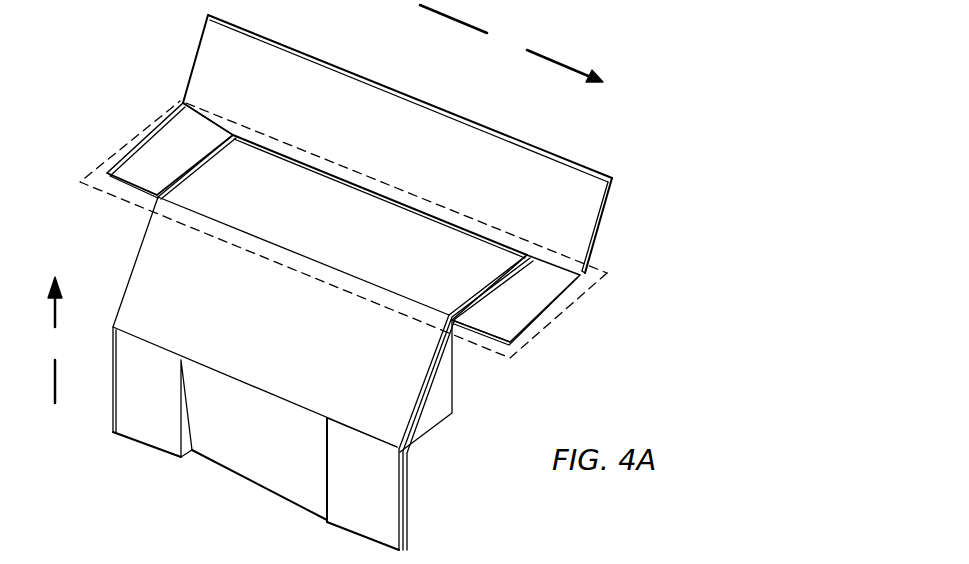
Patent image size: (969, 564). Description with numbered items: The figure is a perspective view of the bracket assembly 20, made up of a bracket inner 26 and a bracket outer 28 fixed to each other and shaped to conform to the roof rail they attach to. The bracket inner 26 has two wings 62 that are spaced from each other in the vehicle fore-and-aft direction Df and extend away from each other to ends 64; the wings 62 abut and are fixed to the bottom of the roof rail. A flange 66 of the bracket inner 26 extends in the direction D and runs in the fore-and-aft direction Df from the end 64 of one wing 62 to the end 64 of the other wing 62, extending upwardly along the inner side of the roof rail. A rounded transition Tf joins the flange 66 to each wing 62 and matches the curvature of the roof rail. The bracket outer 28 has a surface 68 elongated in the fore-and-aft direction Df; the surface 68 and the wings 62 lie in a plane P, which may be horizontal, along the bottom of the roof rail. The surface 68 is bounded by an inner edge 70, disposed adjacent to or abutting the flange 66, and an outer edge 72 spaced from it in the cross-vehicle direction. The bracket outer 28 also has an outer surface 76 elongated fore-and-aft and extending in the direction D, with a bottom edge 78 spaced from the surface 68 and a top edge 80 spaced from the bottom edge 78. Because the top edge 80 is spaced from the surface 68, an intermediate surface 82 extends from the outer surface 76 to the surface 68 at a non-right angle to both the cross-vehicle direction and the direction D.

The bracket assembly 20 is at (372, 283).
The bracket inner 26 is at (610, 207).
The bracket outer 28 is at (333, 176).
The wing 62 is at (150, 125).
The end 64 is at (125, 157).
The flange 66 is at (490, 128).
The surface 68 is at (345, 231).
The inner edge 70 is at (276, 152).
The outer edge 72 is at (190, 206).
The outer surface 76 is at (374, 490).
The bottom edge 78 is at (342, 528).
The top edge 80 is at (347, 427).
The intermediate surface 82 is at (287, 340).
The plane P is at (438, 197).
The transition TF is at (553, 270).
The direction D is at (55, 340).
The vehicle fore-and-aft direction DF is at (511, 43).